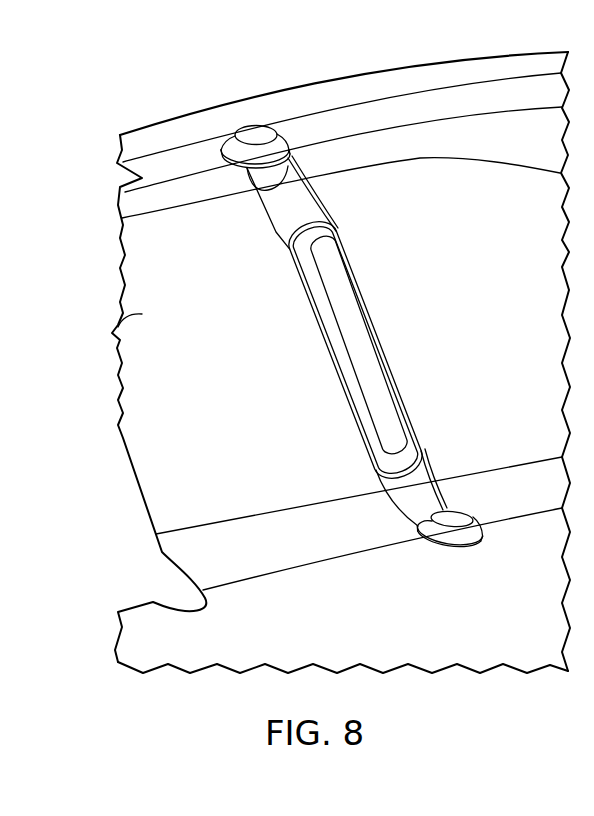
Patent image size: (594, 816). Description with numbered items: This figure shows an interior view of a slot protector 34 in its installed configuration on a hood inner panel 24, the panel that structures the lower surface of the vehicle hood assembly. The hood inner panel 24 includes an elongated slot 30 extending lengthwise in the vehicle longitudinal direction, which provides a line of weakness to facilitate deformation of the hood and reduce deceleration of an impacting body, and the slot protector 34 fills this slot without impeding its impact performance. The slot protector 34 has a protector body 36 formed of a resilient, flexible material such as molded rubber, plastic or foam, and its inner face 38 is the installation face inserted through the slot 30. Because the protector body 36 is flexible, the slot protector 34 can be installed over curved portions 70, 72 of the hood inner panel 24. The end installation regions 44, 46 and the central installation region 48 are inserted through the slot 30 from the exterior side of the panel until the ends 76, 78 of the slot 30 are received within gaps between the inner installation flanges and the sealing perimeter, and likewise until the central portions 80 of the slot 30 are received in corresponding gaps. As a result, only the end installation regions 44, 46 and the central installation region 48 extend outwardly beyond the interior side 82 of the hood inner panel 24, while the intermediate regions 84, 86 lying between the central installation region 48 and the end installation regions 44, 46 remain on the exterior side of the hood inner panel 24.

The hood inner panel 24 is at (119, 330).
The elongated slot 30 is at (341, 341).
The slot protector 34 is at (395, 283).
The protector body 36 is at (300, 212).
The inner face 38 is at (318, 363).
The end installation region 44 is at (269, 109).
The end installation region 46 is at (407, 561).
The central installation region 48 is at (400, 340).
The curved portion 70 is at (205, 138).
The curved portion 72 is at (195, 551).
The end of the slot 76 is at (284, 147).
The end of the slot 78 is at (455, 553).
The central portions of the slot 80 is at (303, 298).
The interior side 82 is at (460, 382).
The intermediate region 84 is at (245, 208).
The intermediate region 86 is at (372, 512).